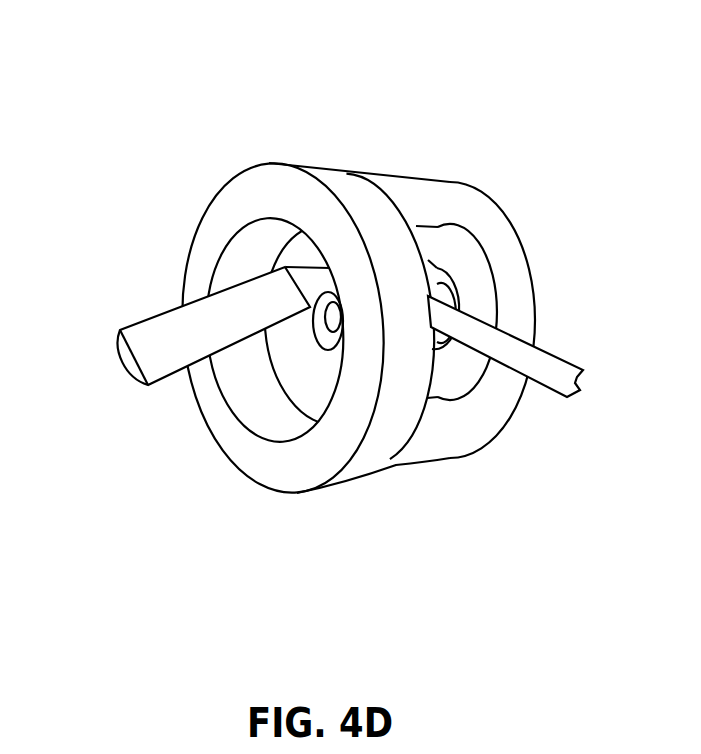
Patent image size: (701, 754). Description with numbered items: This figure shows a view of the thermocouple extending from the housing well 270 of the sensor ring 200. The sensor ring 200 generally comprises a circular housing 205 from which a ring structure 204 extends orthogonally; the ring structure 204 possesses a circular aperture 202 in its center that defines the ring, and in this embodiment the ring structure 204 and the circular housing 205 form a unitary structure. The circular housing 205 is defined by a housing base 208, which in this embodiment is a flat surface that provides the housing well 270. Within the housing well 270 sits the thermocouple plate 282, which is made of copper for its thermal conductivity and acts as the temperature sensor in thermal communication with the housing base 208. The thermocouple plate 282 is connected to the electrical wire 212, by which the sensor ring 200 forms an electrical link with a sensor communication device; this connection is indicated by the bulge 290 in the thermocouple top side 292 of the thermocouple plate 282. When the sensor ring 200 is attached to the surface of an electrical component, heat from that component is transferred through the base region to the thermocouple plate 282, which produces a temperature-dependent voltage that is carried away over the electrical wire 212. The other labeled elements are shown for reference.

The sensor ring 200 is at (336, 32).
The circular aperture 202 is at (507, 279).
The ring structure 204 is at (423, 190).
The circular housing 205 is at (350, 190).
The housing base 208 is at (247, 195).
The electrical wire 212 is at (505, 325).
The housing well 270 is at (262, 415).
The thermocouple plate 282 is at (280, 332).
The bulge 290 is at (252, 280).
The thermocouple top side 292 is at (187, 312).